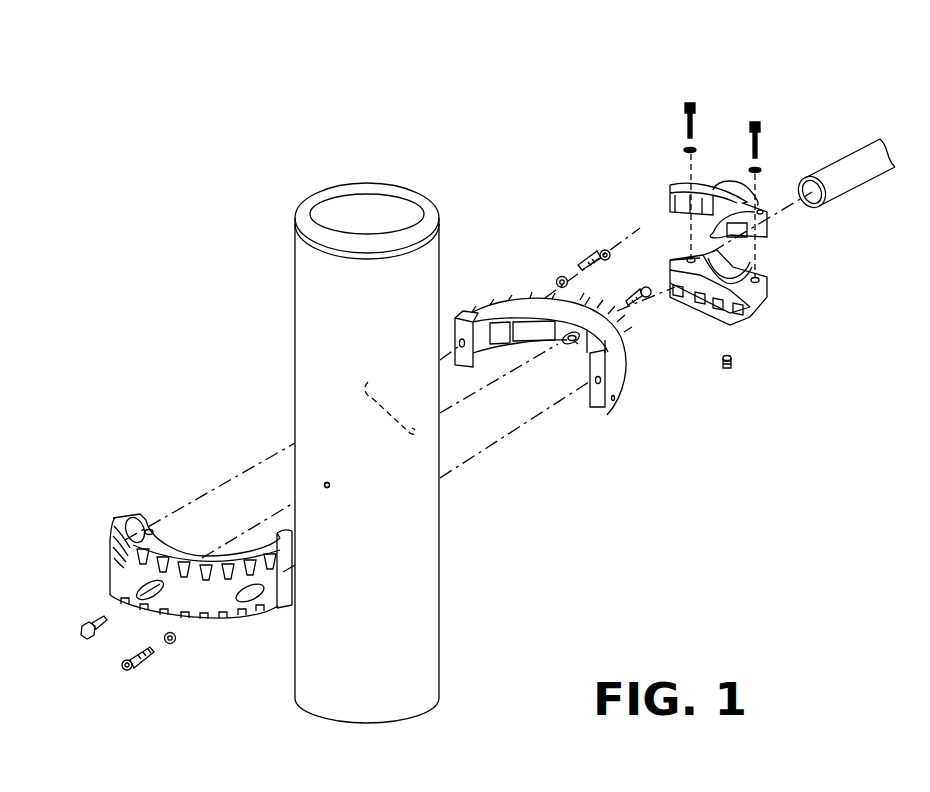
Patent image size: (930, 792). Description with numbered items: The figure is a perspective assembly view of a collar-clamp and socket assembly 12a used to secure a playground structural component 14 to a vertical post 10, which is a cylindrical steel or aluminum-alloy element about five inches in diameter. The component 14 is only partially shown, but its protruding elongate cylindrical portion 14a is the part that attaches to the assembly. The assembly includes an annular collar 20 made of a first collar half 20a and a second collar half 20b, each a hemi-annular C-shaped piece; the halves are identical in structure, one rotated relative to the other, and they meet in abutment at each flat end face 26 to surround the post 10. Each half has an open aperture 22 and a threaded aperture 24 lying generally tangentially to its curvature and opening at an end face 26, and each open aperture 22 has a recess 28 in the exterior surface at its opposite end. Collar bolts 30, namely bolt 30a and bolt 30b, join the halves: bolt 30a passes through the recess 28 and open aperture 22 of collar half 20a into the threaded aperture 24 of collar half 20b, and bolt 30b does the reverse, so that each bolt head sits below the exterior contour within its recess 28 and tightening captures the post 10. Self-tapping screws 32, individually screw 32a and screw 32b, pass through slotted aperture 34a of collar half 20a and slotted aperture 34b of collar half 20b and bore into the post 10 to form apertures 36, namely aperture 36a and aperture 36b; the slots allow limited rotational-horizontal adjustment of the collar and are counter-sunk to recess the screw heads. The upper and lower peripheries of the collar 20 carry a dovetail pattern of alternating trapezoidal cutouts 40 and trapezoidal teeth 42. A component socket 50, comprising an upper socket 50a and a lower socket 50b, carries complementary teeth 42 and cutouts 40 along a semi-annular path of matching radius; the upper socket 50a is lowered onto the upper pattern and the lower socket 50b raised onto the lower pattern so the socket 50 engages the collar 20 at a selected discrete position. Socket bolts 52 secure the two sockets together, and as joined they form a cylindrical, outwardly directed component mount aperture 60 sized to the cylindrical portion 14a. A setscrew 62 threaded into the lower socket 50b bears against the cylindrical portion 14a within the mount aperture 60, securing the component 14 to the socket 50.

The post 10 is at (397, 673).
The collar-clamp and socket assembly 12a is at (541, 122).
The component 14 is at (870, 190).
The cylindrical portion 14a is at (836, 156).
The annular collar 20 is at (325, 602).
The first collar half 20a is at (148, 518).
The second collar half 20b is at (610, 410).
The open aperture 22 is at (447, 345).
The threaded aperture 24 is at (122, 522).
The end face 26 is at (282, 538).
The recess 28 is at (243, 598).
The collar bolts 30 is at (586, 257).
The collar bolt 30a is at (120, 670).
The collar bolt 30b is at (622, 228).
The self-tapping screws 32 is at (95, 643).
The self-tapping screw 32a is at (58, 603).
The self-tapping screw 32b is at (672, 278).
The slotted aperture 34a is at (151, 531).
The slotted aperture 34b is at (566, 338).
The apertures 36 is at (330, 388).
The aperture 36a is at (328, 484).
The aperture 36b is at (392, 402).
The trapezoidal cutouts 40 is at (135, 602).
The trapezoidal teeth 42 is at (110, 532).
The component socket 50 is at (591, 204).
The upper socket 50a is at (735, 240).
The lower socket 50b is at (745, 306).
The socket bolts 52 is at (690, 102).
The component mount aperture 60 is at (722, 268).
The setscrew 62 is at (740, 360).